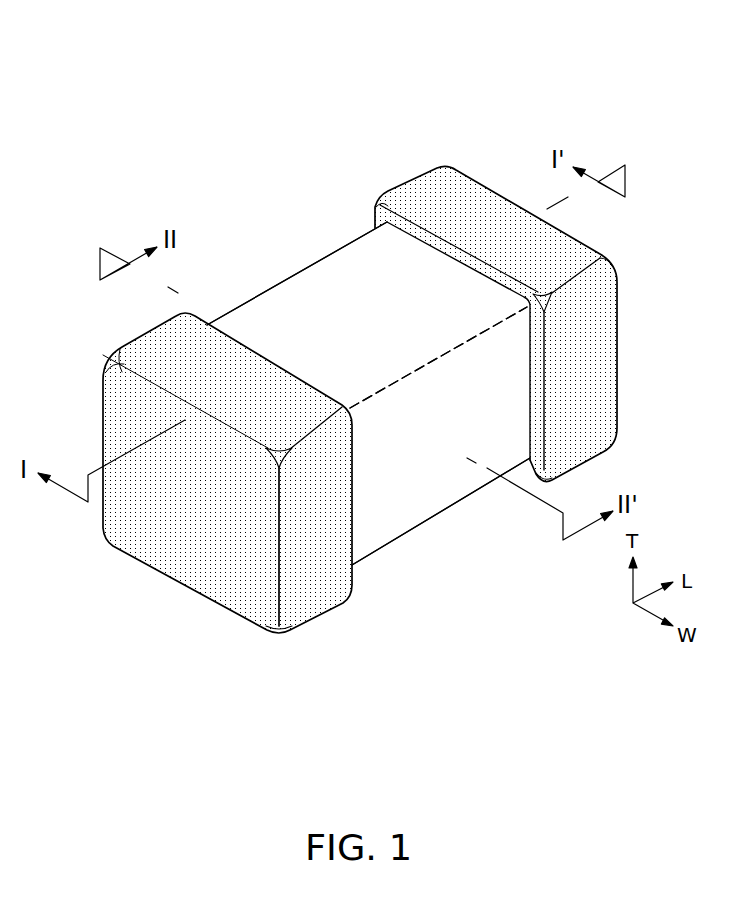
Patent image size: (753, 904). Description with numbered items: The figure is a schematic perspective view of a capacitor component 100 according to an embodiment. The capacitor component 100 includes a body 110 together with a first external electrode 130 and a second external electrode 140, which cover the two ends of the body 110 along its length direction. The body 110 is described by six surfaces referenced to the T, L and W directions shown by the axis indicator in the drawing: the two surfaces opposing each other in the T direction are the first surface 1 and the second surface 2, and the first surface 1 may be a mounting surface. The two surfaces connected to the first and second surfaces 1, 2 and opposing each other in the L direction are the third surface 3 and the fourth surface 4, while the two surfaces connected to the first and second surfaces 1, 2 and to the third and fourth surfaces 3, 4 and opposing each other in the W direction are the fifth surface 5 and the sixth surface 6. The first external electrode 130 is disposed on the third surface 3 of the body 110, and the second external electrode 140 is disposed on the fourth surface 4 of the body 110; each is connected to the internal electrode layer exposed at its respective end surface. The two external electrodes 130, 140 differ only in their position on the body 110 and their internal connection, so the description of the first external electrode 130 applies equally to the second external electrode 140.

The capacitor component 100 is at (212, 89).
The body 110 is at (317, 280).
The first external electrode 130 is at (155, 360).
The second external electrode 140 is at (422, 198).
The first surface 1 is at (401, 513).
The second surface 2 is at (363, 285).
The third surface 3 is at (174, 556).
The fourth surface 4 is at (594, 367).
The fifth surface 5 is at (452, 481).
The sixth surface 6 is at (316, 315).